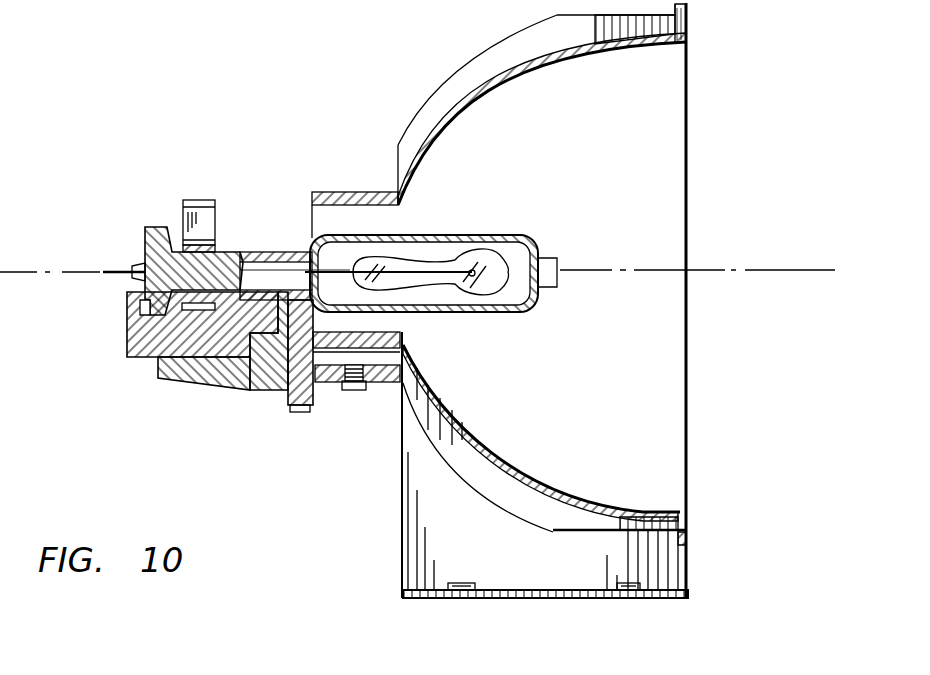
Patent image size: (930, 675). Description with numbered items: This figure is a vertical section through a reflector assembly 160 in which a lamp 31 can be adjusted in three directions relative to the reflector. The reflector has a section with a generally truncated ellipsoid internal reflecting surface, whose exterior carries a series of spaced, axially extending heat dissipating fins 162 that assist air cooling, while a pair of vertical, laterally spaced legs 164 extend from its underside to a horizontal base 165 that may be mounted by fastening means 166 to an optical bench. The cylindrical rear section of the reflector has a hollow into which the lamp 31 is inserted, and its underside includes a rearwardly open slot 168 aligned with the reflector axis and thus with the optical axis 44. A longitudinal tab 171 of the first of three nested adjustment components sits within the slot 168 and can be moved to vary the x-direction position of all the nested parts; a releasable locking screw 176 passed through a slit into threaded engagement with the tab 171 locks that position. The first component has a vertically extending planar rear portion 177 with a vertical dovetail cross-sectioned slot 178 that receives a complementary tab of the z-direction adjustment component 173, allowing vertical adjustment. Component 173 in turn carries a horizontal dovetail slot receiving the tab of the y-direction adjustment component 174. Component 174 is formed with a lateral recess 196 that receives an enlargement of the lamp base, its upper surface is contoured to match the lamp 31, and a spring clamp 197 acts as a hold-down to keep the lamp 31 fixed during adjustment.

The lamp 31 is at (450, 238).
The optical axis 44 is at (775, 268).
The reflector assembly 160 is at (342, 472).
The heat dissipating fins 162 is at (470, 93).
The legs 164 is at (665, 558).
The horizontal base 165 is at (665, 588).
The fastening means 166 is at (467, 585).
The rearwardly open slot 168 is at (415, 398).
The longitudinal tab 171 is at (398, 336).
The z-direction adjustment component 173 is at (148, 343).
The y-direction adjustment component 174 is at (127, 313).
The releasable locking screw 176 is at (352, 390).
The vertically extending planar rear portion 177 is at (282, 405).
The dovetail cross-sectioned slot 178 is at (252, 387).
The lateral recess 196 is at (143, 280).
The spring clamp 197 is at (198, 210).